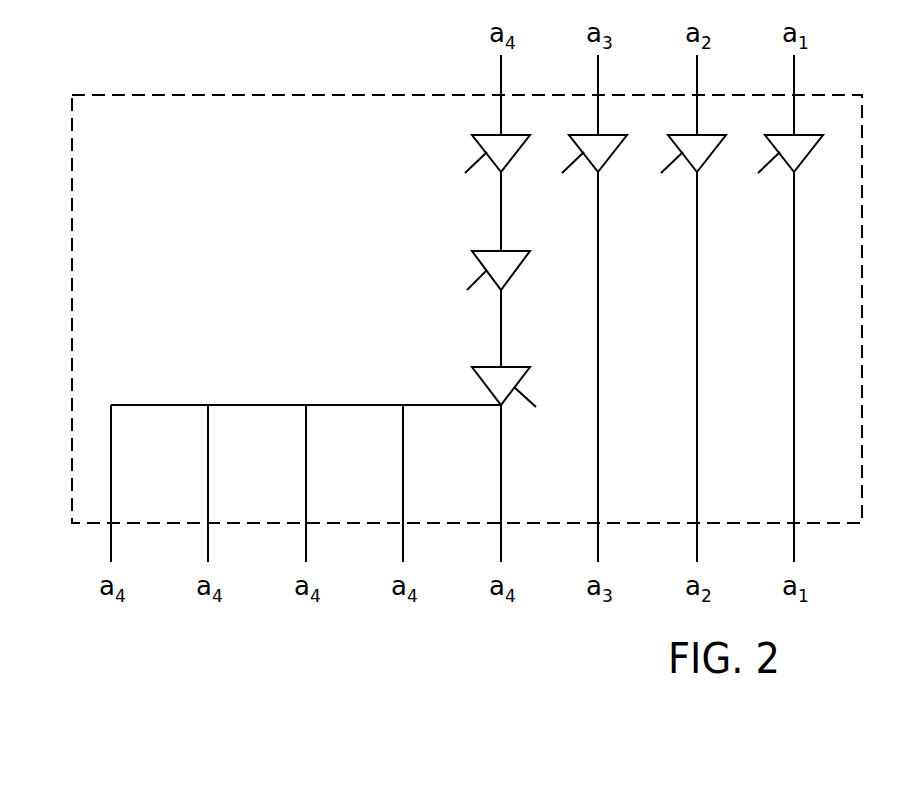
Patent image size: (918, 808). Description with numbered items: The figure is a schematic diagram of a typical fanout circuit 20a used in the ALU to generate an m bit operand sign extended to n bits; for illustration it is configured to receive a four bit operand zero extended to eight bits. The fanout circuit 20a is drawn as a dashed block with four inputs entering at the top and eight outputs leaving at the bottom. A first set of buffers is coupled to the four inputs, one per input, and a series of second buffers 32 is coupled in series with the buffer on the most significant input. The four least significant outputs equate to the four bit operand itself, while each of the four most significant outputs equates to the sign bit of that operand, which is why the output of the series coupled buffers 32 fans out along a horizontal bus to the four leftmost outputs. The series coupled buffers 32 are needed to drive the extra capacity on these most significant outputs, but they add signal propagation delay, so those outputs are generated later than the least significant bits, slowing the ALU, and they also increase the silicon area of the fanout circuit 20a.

The fanout circuit 20a is at (123, 130).
The second buffer 32 is at (491, 347).